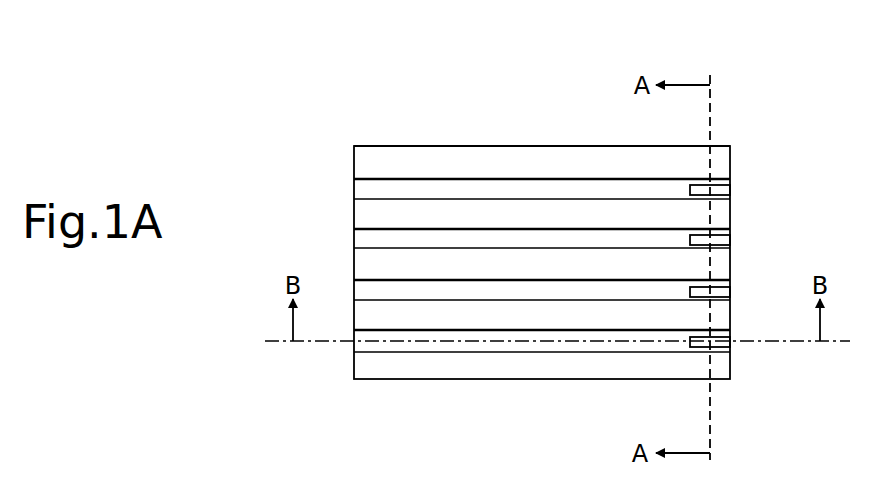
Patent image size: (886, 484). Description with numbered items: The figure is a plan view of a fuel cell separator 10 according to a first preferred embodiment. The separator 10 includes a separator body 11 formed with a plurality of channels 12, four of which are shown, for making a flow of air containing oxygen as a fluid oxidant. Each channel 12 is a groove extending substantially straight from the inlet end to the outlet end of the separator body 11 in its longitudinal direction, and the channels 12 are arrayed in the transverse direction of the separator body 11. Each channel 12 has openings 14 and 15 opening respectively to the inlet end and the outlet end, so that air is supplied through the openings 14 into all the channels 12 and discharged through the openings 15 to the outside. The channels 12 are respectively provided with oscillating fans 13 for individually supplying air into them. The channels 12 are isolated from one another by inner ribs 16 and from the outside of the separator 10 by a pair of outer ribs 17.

The separator 10 is at (534, 189).
The separator body 11 is at (387, 160).
The channels 12 is at (531, 243).
The oscillating fans 13 is at (725, 238).
The openings 14 is at (730, 340).
The openings 15 is at (368, 240).
The inner ribs 16 is at (375, 315).
The outer ribs 17 is at (603, 160).